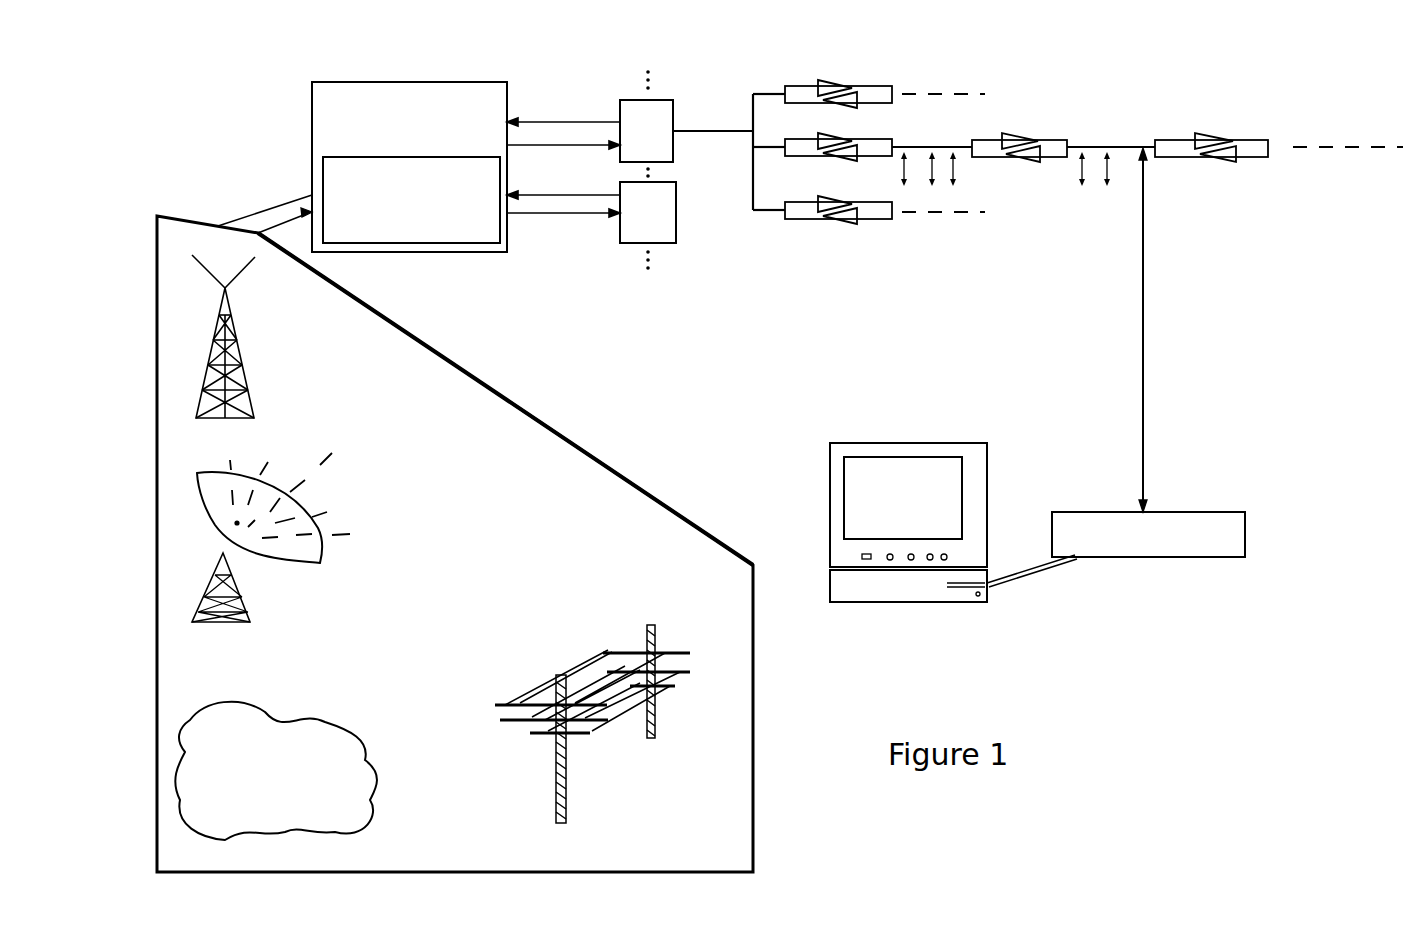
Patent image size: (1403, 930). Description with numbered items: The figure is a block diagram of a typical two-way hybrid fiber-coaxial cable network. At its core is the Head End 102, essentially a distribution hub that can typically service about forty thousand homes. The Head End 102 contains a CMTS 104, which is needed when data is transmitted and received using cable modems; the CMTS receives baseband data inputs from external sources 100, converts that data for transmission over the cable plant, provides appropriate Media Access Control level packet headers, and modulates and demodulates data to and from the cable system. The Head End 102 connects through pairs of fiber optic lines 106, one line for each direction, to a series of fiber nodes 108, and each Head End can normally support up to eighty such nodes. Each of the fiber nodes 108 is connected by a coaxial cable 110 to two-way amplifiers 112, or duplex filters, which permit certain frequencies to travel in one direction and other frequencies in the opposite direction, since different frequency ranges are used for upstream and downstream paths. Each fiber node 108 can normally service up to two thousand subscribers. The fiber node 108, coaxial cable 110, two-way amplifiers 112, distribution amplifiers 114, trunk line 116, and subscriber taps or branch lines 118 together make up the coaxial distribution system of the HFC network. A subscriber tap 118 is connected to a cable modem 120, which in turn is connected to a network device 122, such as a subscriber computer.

The external sources 100 is at (176, 215).
The Head End 102 is at (508, 88).
The CMTS 104 is at (395, 244).
The fiber optic lines 106 is at (555, 196).
The fiber nodes 108 is at (662, 244).
The coaxial cable 110 is at (720, 130).
The two-way amplifiers 112 is at (802, 220).
The distribution amplifiers 114 is at (1018, 166).
The trunk line 116 is at (1105, 147).
The subscriber tap 118 is at (1143, 333).
The cable modem 120 is at (1178, 512).
The network device 122 is at (830, 495).